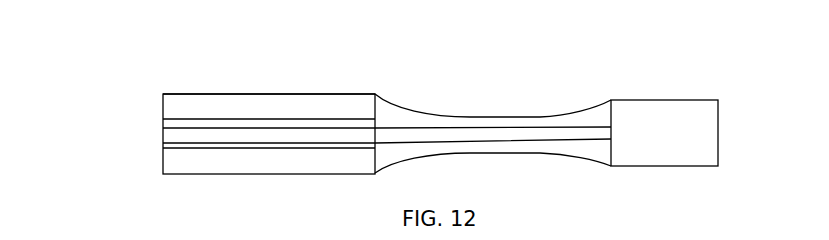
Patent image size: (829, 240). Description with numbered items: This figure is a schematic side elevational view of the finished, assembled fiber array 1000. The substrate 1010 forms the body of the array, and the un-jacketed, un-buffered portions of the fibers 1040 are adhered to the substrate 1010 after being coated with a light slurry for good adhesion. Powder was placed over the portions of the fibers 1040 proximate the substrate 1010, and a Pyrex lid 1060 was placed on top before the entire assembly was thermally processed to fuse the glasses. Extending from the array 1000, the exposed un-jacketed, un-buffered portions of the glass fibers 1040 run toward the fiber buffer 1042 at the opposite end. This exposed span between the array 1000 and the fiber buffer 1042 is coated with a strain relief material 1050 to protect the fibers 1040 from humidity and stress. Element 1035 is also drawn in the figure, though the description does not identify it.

The array 1000 is at (368, 72).
The substrate 1010 is at (256, 171).
The Pyrex lid 1060 is at (204, 102).
The core 1035 is at (166, 127).
The strain relief material 1050 is at (402, 115).
The fibers 1040 is at (510, 133).
The fiber buffer 1042 is at (663, 108).